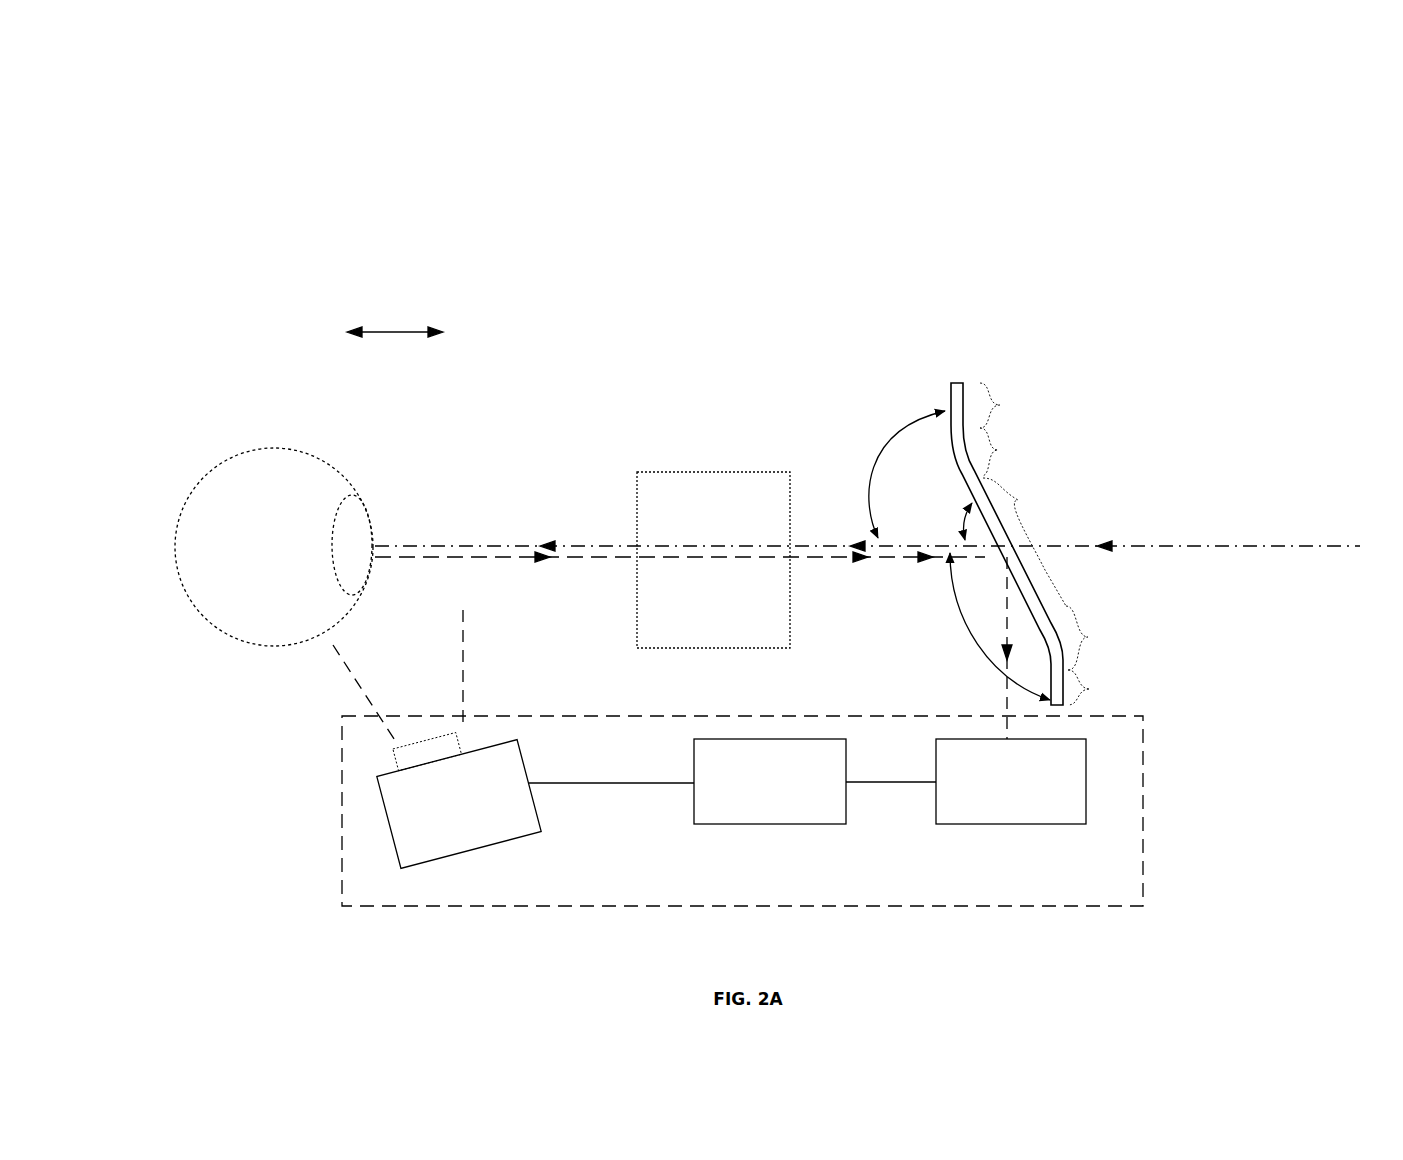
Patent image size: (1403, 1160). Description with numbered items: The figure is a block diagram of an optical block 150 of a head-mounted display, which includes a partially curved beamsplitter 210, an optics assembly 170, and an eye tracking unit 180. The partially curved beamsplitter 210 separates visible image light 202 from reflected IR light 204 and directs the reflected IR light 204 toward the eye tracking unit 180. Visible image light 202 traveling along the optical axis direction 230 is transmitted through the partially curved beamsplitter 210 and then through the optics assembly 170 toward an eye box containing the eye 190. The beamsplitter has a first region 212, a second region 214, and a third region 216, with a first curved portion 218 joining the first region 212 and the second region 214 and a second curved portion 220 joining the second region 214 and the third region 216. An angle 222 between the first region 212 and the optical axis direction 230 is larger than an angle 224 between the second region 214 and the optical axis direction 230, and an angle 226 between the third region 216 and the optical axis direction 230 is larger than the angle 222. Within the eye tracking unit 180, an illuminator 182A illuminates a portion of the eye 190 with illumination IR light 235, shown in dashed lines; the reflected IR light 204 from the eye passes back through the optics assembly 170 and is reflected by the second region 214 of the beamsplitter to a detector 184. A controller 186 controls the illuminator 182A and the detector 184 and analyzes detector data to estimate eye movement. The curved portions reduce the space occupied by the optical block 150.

The optical block 150 is at (194, 179).
The optical axis direction 230 is at (392, 292).
The eye 190 is at (259, 569).
The visible image light 202 is at (1273, 540).
The reflected IR light 204 is at (427, 557).
The optics assembly 170 is at (697, 595).
The partially curved beamsplitter 210 is at (953, 368).
The first region 212 is at (1051, 400).
The first curved portion 218 is at (1060, 448).
The second region 214 is at (1070, 542).
The second curved portion 220 is at (1148, 640).
The third region 216 is at (1144, 698).
The angle 224 is at (887, 474).
The angle 222 is at (941, 513).
The angle 226 is at (982, 626).
The eye tracking unit 180 is at (1047, 905).
The illumination IR light 235 is at (355, 677).
The illuminator 182A is at (532, 793).
The controller 186 is at (754, 805).
The detector 184 is at (995, 805).